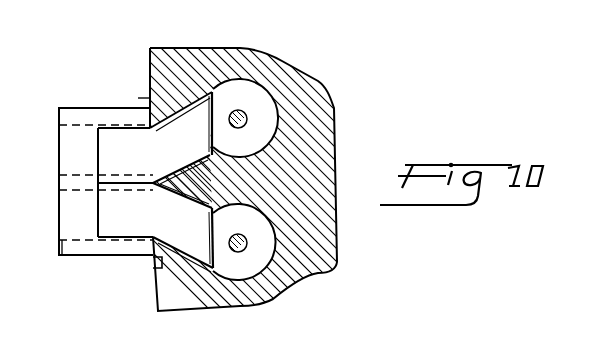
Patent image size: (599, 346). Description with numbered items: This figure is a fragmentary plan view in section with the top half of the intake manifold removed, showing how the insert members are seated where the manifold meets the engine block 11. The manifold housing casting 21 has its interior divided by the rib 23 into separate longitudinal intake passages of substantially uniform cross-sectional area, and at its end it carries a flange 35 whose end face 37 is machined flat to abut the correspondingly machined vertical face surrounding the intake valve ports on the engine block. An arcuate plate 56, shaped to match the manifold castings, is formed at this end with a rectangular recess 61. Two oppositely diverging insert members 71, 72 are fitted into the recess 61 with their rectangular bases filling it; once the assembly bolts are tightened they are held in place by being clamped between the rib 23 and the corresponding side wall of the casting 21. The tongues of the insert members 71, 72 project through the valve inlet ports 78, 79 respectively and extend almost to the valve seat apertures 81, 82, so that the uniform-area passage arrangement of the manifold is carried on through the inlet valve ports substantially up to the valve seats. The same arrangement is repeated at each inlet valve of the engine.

The nozzle body 11 is at (281, 54).
The casting 21 is at (134, 257).
The rib 23 is at (70, 164).
The flange 35 is at (138, 100).
The end face 37 is at (152, 274).
The plate 56 is at (73, 243).
The rectangular recess 61 is at (110, 237).
The insert member 71 is at (209, 272).
The insert member 72 is at (168, 115).
The valve inlet port 78 is at (187, 250).
The valve inlet port 79 is at (197, 100).
The valve seat aperture 81 is at (267, 104).
The valve seat aperture 82 is at (258, 274).